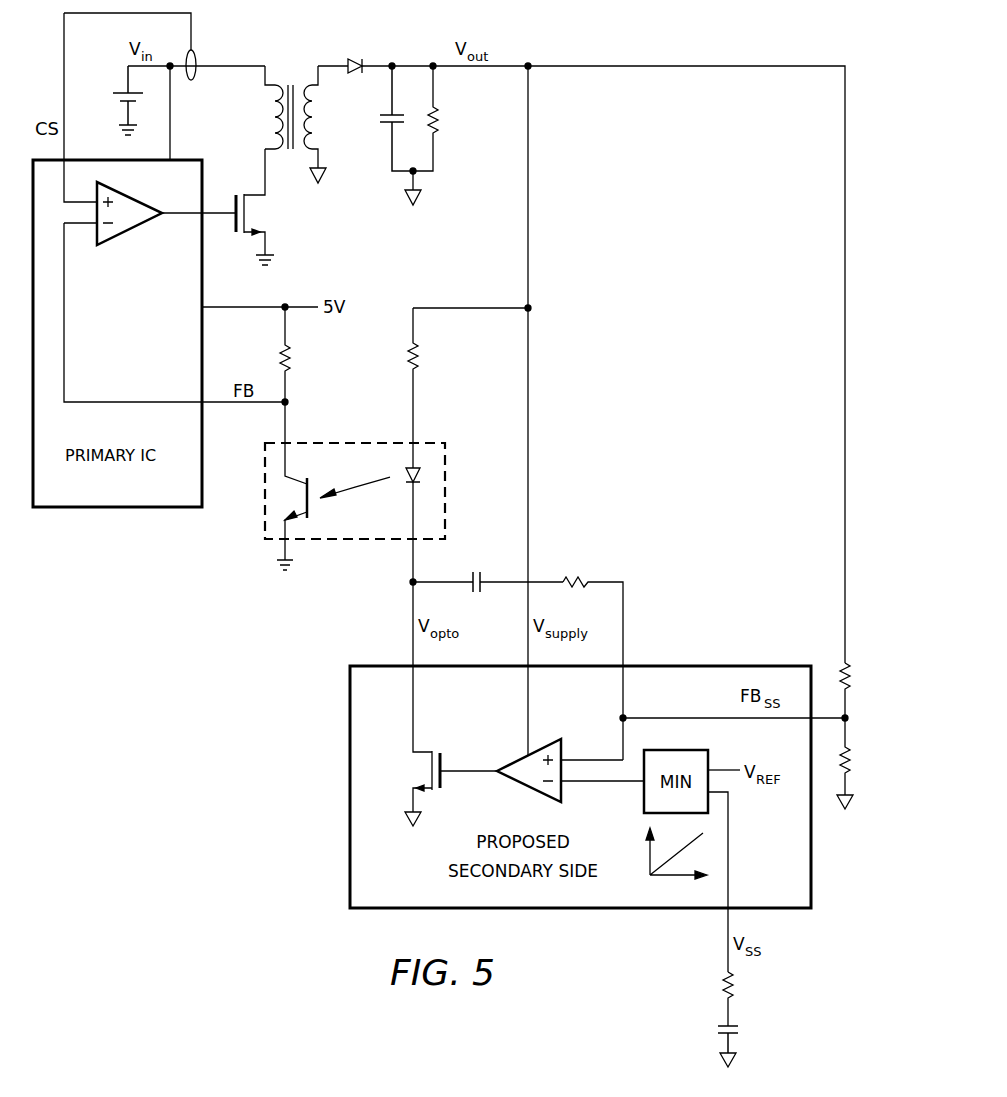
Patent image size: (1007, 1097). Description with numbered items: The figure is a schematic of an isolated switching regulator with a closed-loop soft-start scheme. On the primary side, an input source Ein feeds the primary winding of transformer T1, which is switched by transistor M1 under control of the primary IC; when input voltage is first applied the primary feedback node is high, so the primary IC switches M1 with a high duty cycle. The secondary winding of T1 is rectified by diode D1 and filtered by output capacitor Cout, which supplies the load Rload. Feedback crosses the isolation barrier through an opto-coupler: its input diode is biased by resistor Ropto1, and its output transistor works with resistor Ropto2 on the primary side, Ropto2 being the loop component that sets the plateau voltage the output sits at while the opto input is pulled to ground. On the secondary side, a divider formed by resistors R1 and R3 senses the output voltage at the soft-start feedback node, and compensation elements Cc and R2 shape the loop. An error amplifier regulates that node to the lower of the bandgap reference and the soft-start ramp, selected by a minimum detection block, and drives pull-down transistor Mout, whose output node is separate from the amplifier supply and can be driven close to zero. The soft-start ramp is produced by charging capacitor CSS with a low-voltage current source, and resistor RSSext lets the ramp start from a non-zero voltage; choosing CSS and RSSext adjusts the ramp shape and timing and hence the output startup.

The input voltage source Ein is at (113, 100).
The transistor M1 is at (262, 207).
The transformer T1 is at (295, 111).
The output rectifier diode D1 is at (355, 51).
The output capacitor Cout is at (375, 118).
The load resistor Rload is at (448, 118).
The resistor Ropto2 is at (312, 354).
The bias resistor Ropto1 is at (468, 388).
The capacitor Cc is at (488, 569).
The resistor R2 is at (593, 653).
The pull down transistor Mout is at (432, 704).
The resistor R1 is at (858, 690).
The resistor R3 is at (856, 763).
The resistor RSSext is at (755, 999).
The capacitor CSS is at (746, 1043).